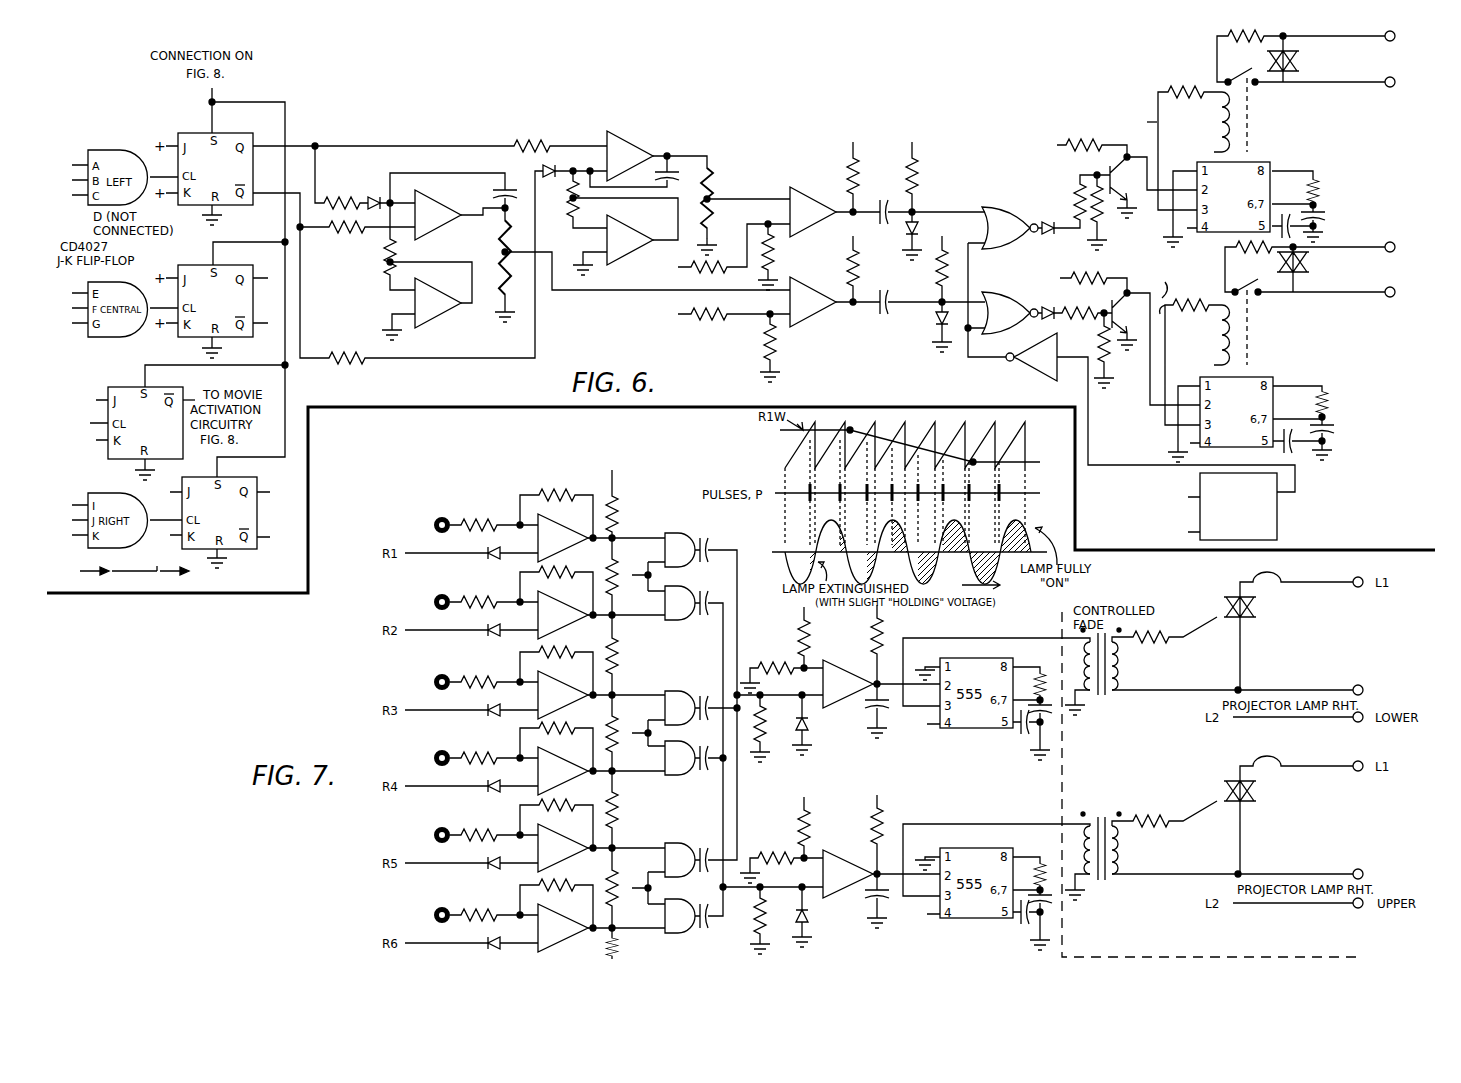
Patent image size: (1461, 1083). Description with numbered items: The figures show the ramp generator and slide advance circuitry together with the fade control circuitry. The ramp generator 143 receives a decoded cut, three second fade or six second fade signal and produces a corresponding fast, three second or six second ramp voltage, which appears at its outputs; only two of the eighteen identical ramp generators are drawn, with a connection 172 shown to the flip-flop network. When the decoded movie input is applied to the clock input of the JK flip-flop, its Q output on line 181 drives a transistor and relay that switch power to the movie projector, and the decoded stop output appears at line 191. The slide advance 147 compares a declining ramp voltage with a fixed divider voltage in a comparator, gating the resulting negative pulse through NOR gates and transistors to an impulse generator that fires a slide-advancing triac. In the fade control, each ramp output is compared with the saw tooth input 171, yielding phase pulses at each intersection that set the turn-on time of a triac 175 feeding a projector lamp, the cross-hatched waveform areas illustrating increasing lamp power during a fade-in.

In FIG. 6, the connection to flip-flop set input 172 is at (202, 102).
In FIG. 6, the ramp generator 143 is at (684, 128).
In FIG. 6, the slide advance 147 is at (686, 122).
In FIG. 6, the Q output line 181 is at (195, 400).
In FIG. 6, the stop output line 191 is at (162, 568).
In FIG. 7, the saw tooth input 171 is at (439, 517).
In FIG. 7, the triac 175 is at (1217, 611).